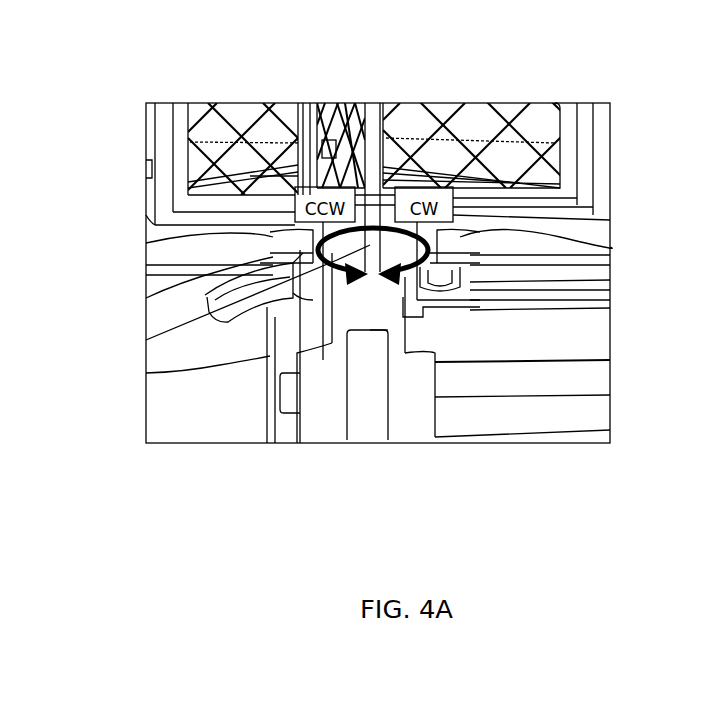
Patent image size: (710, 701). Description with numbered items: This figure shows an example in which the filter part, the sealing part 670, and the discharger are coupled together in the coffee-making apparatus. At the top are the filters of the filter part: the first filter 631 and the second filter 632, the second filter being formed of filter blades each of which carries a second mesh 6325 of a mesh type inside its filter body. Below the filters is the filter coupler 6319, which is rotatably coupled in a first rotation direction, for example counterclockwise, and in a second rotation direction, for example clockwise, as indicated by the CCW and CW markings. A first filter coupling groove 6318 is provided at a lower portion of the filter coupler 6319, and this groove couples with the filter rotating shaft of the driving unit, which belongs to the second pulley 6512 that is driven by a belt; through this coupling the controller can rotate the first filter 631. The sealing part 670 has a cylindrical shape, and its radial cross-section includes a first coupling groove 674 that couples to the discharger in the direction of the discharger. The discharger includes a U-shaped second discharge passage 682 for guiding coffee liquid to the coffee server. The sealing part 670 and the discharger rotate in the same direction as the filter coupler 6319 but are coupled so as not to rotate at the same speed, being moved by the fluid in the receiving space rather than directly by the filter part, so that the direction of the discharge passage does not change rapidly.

The second mesh 6325 is at (498, 108).
The second filter 632 is at (572, 127).
The first filter 631 is at (583, 180).
The first coupling groove 674 is at (610, 245).
The sealing part 670 is at (146, 243).
The filter coupler 6319 is at (173, 287).
The second discharge passage 682 is at (173, 315).
The first filter coupling groove 6318 is at (173, 369).
The second pulley 6512 is at (330, 425).